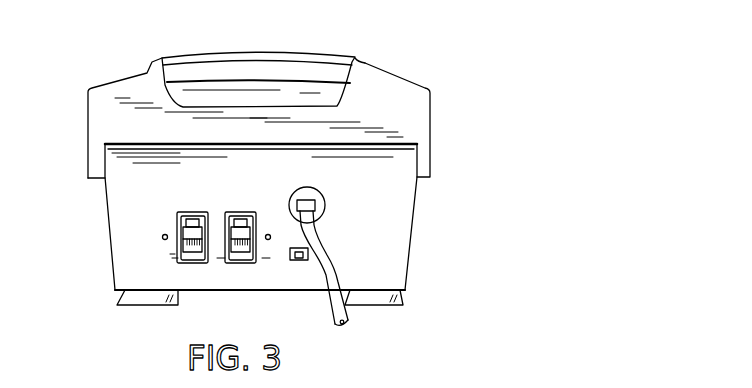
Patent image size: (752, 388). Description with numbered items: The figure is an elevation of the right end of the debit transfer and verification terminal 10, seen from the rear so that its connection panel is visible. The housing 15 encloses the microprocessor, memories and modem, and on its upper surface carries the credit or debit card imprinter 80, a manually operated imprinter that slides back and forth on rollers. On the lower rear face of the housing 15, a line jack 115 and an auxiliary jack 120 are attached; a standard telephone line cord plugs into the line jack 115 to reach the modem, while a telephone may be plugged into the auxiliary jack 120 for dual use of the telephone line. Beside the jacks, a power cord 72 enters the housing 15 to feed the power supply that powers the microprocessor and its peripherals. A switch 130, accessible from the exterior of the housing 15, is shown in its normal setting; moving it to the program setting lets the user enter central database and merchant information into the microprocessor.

The debit transfer and verification terminal 10 is at (420, 207).
The housing 15 is at (107, 230).
The power cord 72 is at (322, 260).
The credit or debit card imprinter 80 is at (372, 55).
The line jack 115 is at (260, 212).
The auxiliary jack 120 is at (177, 212).
The switch 130 is at (301, 262).